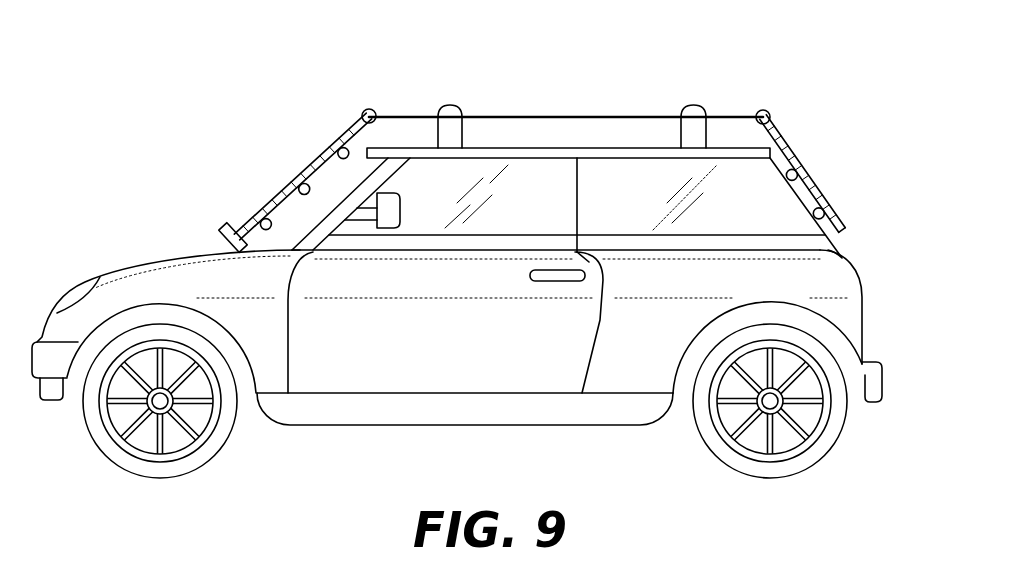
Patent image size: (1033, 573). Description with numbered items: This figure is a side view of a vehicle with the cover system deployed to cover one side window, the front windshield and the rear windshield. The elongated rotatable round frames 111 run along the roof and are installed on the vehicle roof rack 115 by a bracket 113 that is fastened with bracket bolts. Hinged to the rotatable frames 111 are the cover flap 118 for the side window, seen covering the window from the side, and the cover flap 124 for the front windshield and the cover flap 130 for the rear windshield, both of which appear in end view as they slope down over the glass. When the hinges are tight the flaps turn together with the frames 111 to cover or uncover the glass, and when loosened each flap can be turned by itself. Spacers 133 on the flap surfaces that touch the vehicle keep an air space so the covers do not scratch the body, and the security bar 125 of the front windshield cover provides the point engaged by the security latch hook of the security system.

The rotatable frame 111 is at (772, 116).
The bracket 113 is at (452, 107).
The vehicle roof rack 115 is at (532, 152).
The cover flap for side window 118 is at (747, 167).
The cover flap for front windshield 124 is at (305, 170).
The security bar 125 is at (221, 238).
The cover flap for rear windshield 130 is at (812, 177).
The spacer 133 is at (852, 224).